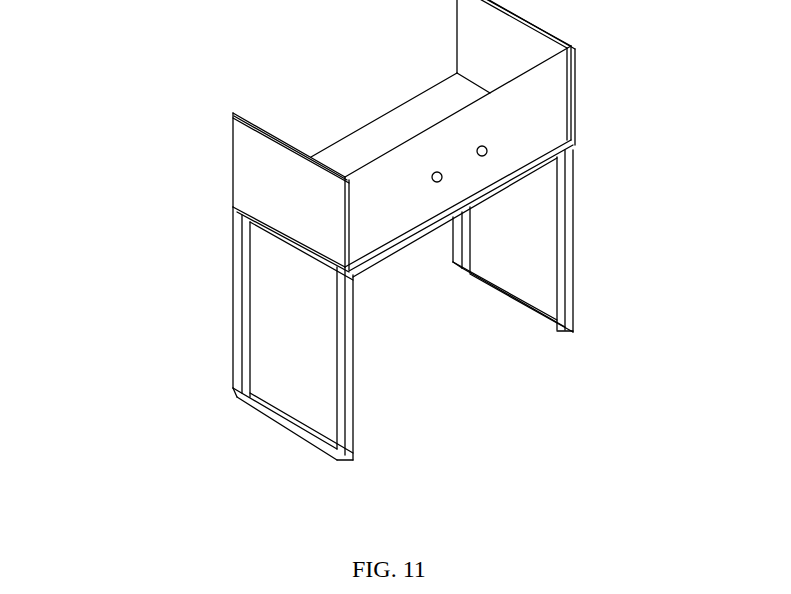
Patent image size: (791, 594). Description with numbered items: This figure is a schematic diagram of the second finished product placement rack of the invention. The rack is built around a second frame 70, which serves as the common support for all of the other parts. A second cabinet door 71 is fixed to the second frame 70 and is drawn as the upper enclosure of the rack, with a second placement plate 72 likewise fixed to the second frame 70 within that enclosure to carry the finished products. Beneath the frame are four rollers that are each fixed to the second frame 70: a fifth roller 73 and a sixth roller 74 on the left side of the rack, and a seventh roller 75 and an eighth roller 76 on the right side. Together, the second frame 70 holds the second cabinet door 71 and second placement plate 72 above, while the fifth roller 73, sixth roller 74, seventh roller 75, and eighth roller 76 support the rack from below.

The second frame 70 is at (305, 335).
The second cabinet door 71 is at (560, 125).
The second placement plate 72 is at (423, 116).
The fifth roller 73 is at (237, 392).
The sixth roller 74 is at (330, 453).
The seventh roller 75 is at (567, 332).
The eighth roller 76 is at (463, 272).